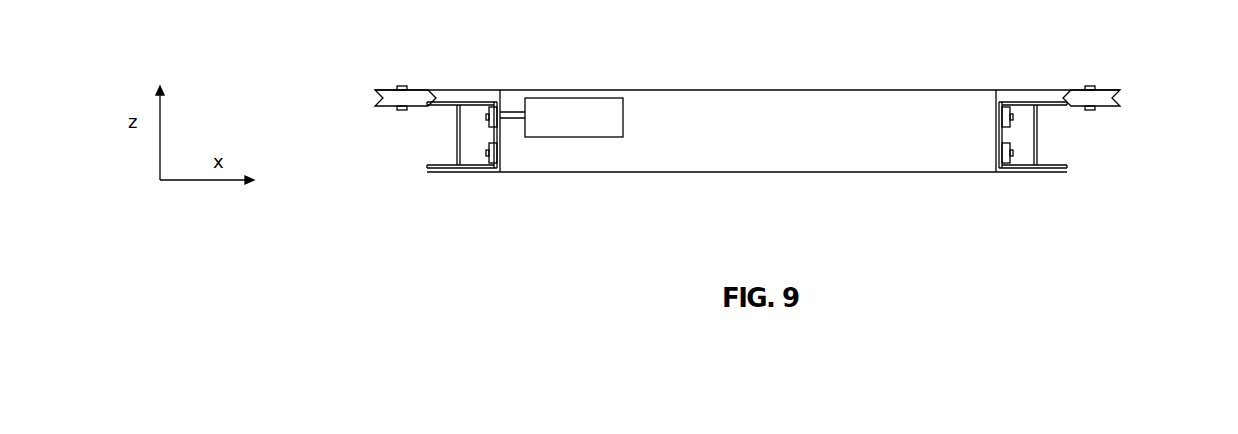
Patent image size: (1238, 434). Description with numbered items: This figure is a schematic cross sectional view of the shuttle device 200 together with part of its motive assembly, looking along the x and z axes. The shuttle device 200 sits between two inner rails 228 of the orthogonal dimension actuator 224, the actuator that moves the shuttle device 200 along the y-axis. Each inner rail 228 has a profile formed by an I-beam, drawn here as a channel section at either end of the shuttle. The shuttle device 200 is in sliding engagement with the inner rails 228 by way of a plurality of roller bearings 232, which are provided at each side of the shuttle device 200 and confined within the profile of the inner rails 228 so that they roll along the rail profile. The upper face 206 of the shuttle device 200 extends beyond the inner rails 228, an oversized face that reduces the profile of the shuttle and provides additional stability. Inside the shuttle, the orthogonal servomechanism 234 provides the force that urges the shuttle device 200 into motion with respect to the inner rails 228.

The shuttle device 200 is at (789, 96).
The upper face 206 is at (938, 90).
The orthogonal dimension actuator 224 is at (748, 145).
The inner rails 228 is at (430, 169).
The roller bearings 232 is at (378, 97).
The orthogonal servomechanism 234 is at (574, 102).